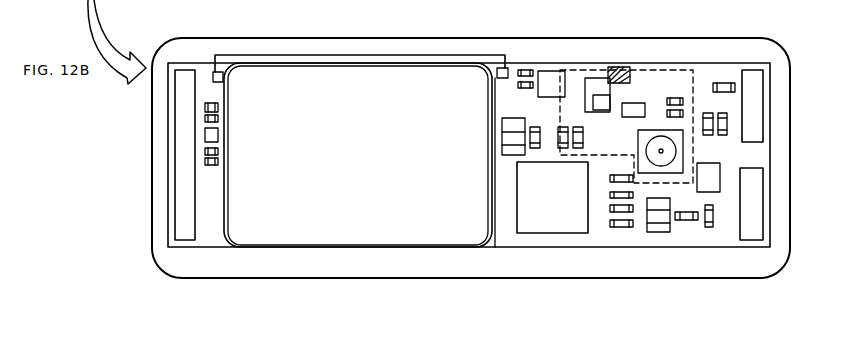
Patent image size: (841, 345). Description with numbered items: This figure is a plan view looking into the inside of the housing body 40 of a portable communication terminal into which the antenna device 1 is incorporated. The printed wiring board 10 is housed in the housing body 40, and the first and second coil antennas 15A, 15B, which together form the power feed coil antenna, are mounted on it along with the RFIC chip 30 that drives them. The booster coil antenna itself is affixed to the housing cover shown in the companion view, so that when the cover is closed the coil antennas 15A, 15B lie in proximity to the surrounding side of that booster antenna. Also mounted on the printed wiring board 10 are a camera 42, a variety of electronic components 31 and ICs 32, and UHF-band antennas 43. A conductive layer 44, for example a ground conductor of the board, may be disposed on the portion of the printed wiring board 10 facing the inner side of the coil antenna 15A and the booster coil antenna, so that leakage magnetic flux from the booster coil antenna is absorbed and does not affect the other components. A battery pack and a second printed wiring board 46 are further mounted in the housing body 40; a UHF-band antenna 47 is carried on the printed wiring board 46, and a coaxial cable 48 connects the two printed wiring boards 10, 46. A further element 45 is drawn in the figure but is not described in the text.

The antenna device 1 is at (581, 66).
The printed wiring board 10 is at (697, 68).
The first coil antenna 15A is at (619, 67).
The second coil antenna 15B is at (603, 78).
The RFIC chip 30 is at (638, 103).
The electronic components 31 is at (565, 126).
The ICs 32 is at (553, 233).
The housing body 40 is at (342, 38).
The camera 42 is at (640, 144).
The UHF-band antennas 43 is at (760, 104).
The conductive layer 44 is at (692, 95).
The display panel 45 is at (437, 72).
The printed wiring board 46 is at (214, 70).
The UHF-band antenna 47 is at (180, 174).
The coaxial cable 48 is at (301, 55).